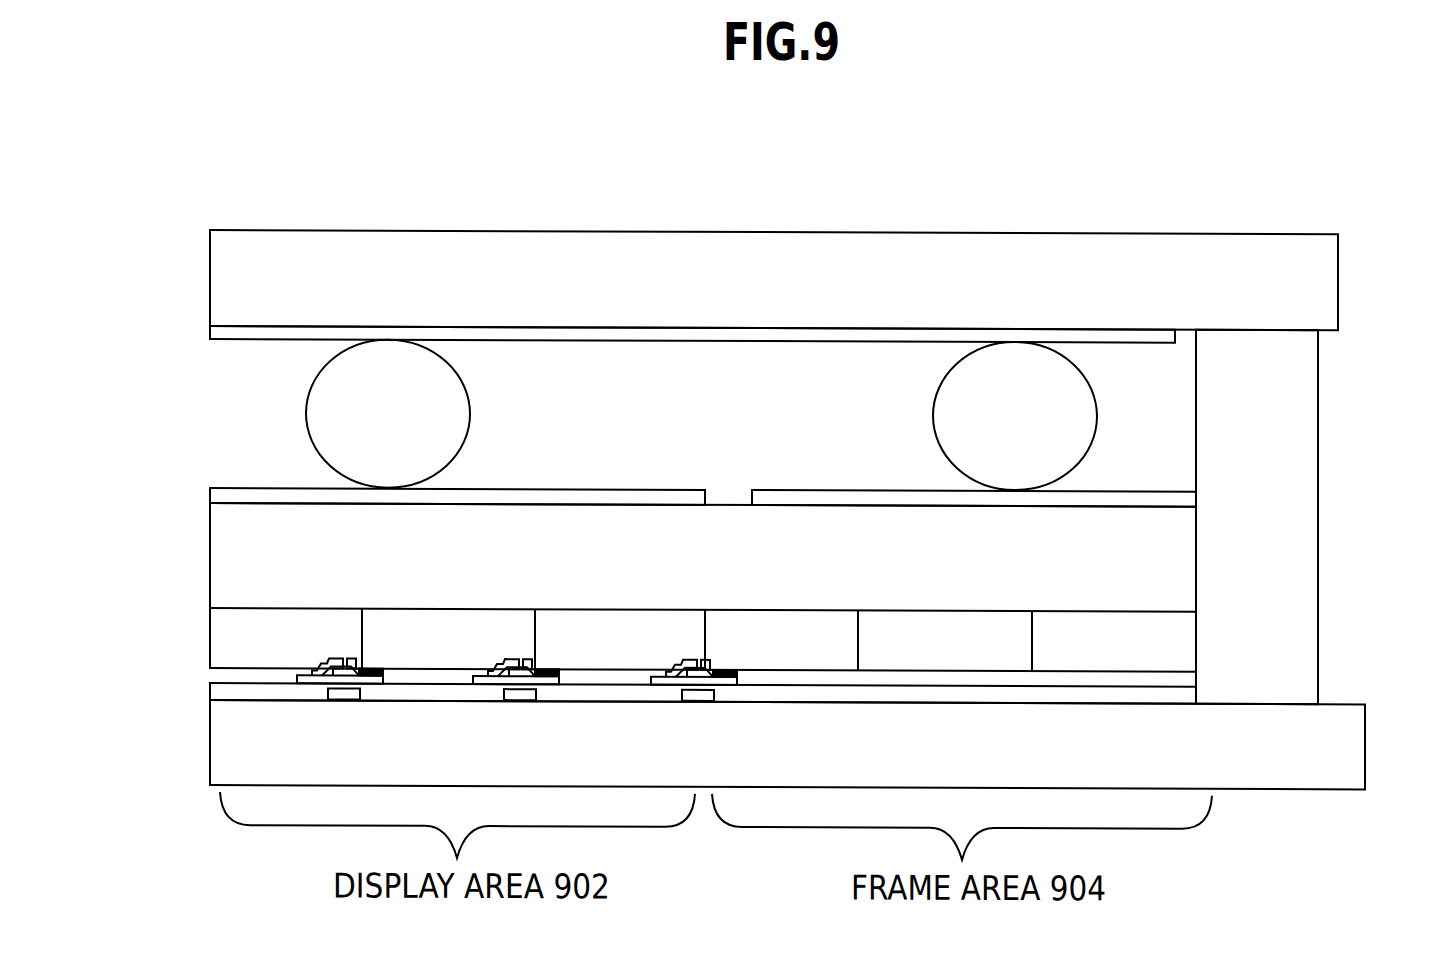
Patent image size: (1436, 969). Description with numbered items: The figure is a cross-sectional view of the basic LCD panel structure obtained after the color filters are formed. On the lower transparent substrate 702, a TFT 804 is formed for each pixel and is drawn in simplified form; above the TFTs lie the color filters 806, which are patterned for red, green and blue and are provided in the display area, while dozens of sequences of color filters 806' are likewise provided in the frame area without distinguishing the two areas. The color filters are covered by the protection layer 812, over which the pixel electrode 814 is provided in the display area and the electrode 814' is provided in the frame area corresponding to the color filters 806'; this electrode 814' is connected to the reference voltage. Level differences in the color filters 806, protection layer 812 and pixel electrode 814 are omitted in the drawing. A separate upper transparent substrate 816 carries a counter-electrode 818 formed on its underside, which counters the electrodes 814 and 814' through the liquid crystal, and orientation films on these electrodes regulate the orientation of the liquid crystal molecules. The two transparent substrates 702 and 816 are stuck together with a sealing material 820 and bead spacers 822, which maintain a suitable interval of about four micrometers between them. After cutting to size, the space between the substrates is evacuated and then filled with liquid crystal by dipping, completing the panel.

The transparent substrate 702 is at (1366, 765).
The TFT 804 is at (340, 713).
The color filters 806 is at (483, 611).
The color filters 806' is at (959, 613).
The protection layer 812 is at (210, 545).
The pixel electrode 814 is at (457, 470).
The electrode 814' is at (974, 472).
The transparent substrate 816 is at (1346, 302).
The counter-electrode 818 is at (762, 341).
The sealing material 820 is at (1320, 562).
The bead spacers 822 is at (504, 388).